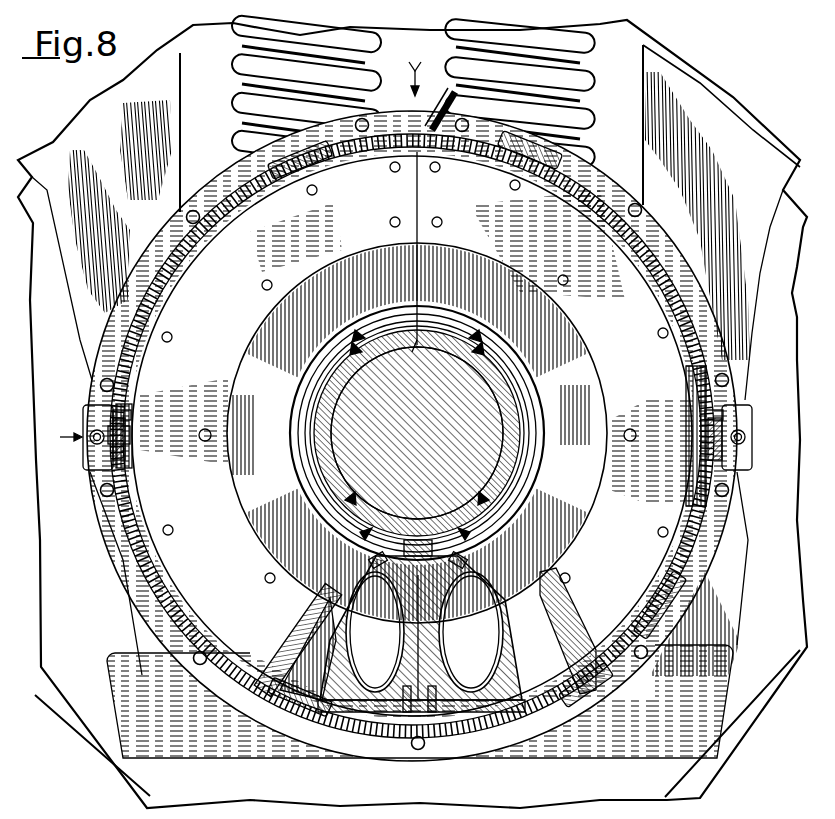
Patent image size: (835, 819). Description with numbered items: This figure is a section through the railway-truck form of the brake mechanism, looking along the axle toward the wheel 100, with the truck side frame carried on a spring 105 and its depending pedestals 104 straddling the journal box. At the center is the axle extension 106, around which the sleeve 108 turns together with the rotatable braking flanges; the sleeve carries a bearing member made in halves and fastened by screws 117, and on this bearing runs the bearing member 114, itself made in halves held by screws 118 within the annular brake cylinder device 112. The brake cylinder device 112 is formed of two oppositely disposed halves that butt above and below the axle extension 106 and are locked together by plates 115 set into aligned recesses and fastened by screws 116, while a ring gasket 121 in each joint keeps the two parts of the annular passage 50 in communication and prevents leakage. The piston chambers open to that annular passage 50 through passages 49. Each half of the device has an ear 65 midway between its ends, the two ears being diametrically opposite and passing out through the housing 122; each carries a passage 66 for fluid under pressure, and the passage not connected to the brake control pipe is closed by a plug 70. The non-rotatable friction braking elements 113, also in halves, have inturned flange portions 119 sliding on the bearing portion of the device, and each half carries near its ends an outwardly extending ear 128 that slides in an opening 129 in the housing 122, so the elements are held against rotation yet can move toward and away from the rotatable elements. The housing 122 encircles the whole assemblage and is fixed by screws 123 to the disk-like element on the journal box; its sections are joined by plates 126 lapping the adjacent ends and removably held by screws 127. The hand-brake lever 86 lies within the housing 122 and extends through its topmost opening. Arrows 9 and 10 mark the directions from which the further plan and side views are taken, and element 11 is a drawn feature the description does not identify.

The arrow 9 is at (414, 65).
The arrow 10 is at (58, 438).
The center axis 11 is at (412, 352).
The passage 49 is at (498, 582).
The annular passage 50 is at (416, 540).
The ear 65 is at (110, 430).
The passage 66 is at (92, 434).
The plug 70 is at (746, 438).
The lever 86 is at (450, 96).
The wheel 100 is at (108, 770).
The pedestal 104 is at (752, 292).
The spring 105 is at (240, 66).
The axle extension 106 is at (345, 446).
The sleeve 108 is at (498, 458).
The brake cylinder device 112 is at (410, 640).
The non-rotatable friction braking element 113 is at (286, 648).
The bearing member 114 is at (308, 414).
The plate 115 is at (405, 714).
The screw 116 is at (432, 714).
The screw 117 is at (522, 512).
The screw 118 is at (358, 334).
The inturned flange portion 119 is at (372, 562).
The ring gasket 121 is at (424, 632).
The housing 122 is at (170, 268).
The screw 123 is at (362, 118).
The plate 126 is at (112, 470).
The screw 127 is at (116, 418).
The ear 128 is at (292, 162).
The opening 129 is at (346, 150).